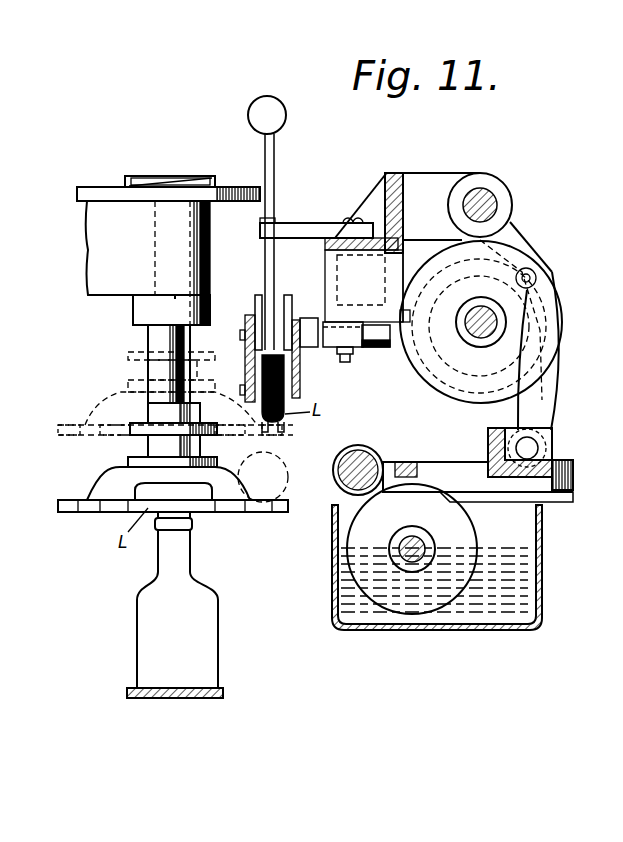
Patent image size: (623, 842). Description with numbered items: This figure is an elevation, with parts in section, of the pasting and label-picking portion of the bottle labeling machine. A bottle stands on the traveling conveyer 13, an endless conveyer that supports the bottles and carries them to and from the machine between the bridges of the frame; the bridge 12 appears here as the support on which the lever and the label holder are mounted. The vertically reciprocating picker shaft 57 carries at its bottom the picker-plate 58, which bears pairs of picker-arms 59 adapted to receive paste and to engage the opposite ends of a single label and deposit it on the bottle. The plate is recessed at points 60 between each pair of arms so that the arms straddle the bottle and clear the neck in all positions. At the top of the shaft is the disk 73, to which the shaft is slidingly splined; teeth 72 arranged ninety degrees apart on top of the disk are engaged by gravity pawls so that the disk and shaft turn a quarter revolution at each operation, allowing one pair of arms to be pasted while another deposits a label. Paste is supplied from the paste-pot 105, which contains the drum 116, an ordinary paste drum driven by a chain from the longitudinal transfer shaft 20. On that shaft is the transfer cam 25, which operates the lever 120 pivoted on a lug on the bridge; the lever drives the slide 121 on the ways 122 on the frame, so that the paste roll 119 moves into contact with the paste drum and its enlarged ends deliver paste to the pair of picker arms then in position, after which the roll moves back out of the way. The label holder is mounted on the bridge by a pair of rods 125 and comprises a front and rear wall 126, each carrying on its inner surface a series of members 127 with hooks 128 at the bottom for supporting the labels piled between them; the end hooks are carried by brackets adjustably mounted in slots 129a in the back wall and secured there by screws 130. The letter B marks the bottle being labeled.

The bridge 12 is at (396, 176).
The traveling conveyer 13 is at (142, 699).
The longitudinal transfer shaft 20 is at (475, 338).
The transfer cam 25 is at (432, 380).
The picker shaft 57 is at (158, 339).
The picker-plate 58 is at (150, 478).
The picker-arms 59 is at (226, 506).
The recesses 60 is at (158, 490).
The teeth 72 is at (143, 181).
The disk 73 is at (93, 195).
The paste-pot 105 is at (424, 631).
The drum 116 is at (462, 538).
The paste roll 119 is at (278, 480).
The lever 120 is at (514, 240).
The slide 121 is at (428, 468).
The ways 122 is at (570, 494).
The rods 125 is at (370, 348).
The front and rear wall 126 is at (247, 373).
The members 127 is at (257, 305).
The hooks 128 is at (286, 426).
The slots 129a is at (336, 312).
The screws 130 is at (303, 362).
The bottle B is at (137, 626).